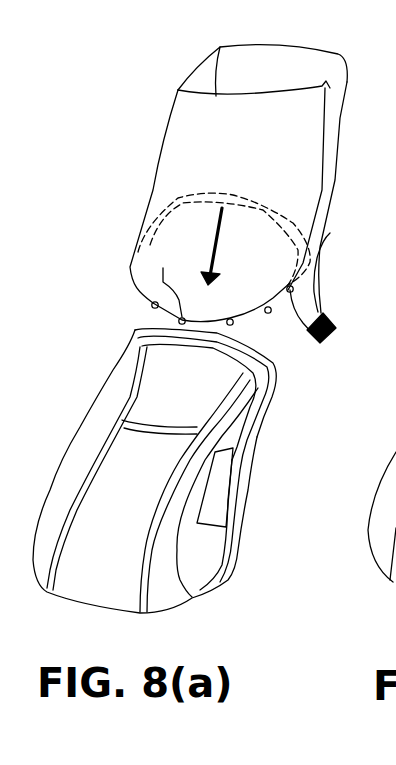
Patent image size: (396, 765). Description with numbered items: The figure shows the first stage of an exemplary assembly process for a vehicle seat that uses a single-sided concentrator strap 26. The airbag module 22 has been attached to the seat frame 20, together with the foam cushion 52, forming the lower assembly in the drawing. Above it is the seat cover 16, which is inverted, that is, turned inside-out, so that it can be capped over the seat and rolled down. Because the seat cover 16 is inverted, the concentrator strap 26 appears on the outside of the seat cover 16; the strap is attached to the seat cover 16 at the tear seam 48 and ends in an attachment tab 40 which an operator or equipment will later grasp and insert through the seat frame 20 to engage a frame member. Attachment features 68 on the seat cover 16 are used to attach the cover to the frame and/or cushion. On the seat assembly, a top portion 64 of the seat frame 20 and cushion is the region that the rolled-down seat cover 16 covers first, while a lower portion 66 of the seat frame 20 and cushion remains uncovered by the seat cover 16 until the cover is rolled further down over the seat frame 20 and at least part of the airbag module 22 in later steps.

The seat cover 16 is at (342, 110).
The seat frame 20 is at (235, 427).
The airbag module 22 is at (218, 480).
The concentrator strap 26 is at (316, 272).
The attachment tab 40 is at (334, 338).
The tear seam 48 is at (330, 233).
The foam cushion 52 is at (107, 410).
The top portion 64 is at (265, 390).
The lower portion 66 is at (229, 541).
The attachment features 68 is at (166, 281).